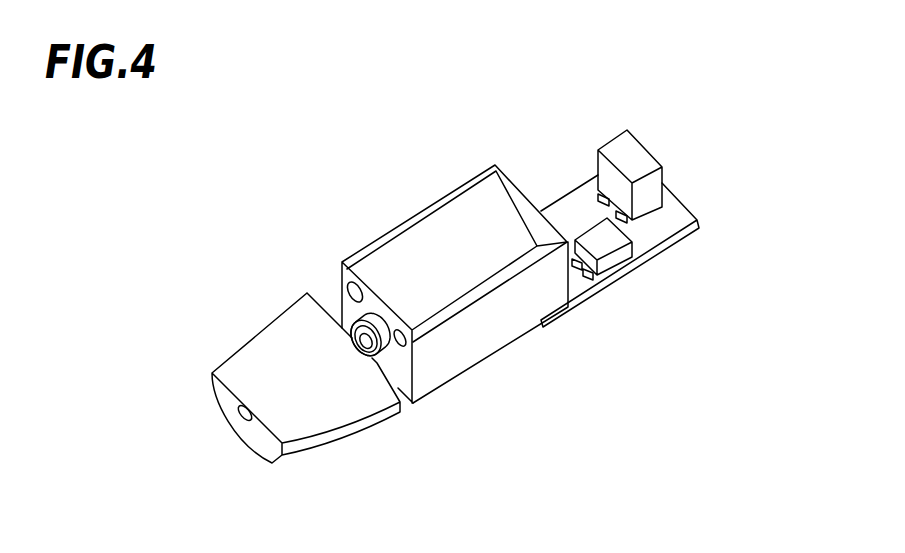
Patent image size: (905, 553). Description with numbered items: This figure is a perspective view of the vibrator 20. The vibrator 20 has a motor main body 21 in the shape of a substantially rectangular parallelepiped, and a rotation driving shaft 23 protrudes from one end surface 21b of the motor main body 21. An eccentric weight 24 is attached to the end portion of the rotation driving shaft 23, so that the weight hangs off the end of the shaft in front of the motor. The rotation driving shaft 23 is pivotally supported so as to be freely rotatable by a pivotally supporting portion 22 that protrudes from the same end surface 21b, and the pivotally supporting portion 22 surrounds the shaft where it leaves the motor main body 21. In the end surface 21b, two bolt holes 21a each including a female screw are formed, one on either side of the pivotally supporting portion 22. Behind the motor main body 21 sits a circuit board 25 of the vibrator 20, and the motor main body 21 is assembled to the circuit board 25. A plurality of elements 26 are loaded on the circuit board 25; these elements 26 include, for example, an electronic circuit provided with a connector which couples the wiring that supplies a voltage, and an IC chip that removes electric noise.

The vibrator 20 is at (462, 120).
The motor main body 21 is at (408, 240).
The bolt holes 21a is at (363, 288).
The end surface 21b is at (413, 372).
The pivotally supporting portion 22 is at (367, 316).
The rotation driving shaft 23 is at (360, 347).
The eccentric weight 24 is at (303, 447).
The circuit board 25 is at (670, 252).
The elements 26 is at (596, 240).